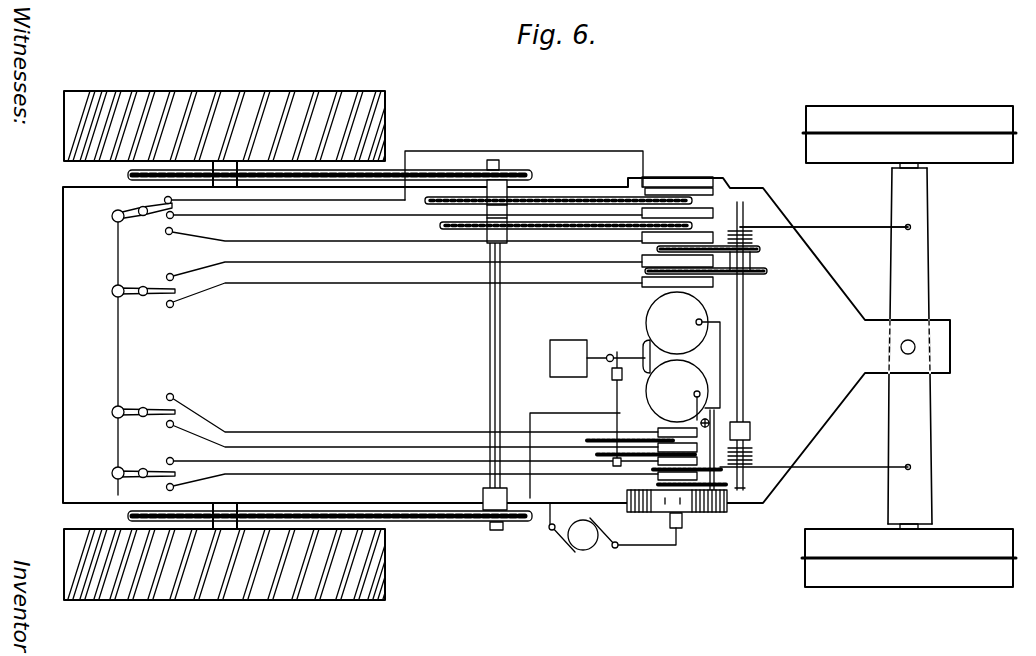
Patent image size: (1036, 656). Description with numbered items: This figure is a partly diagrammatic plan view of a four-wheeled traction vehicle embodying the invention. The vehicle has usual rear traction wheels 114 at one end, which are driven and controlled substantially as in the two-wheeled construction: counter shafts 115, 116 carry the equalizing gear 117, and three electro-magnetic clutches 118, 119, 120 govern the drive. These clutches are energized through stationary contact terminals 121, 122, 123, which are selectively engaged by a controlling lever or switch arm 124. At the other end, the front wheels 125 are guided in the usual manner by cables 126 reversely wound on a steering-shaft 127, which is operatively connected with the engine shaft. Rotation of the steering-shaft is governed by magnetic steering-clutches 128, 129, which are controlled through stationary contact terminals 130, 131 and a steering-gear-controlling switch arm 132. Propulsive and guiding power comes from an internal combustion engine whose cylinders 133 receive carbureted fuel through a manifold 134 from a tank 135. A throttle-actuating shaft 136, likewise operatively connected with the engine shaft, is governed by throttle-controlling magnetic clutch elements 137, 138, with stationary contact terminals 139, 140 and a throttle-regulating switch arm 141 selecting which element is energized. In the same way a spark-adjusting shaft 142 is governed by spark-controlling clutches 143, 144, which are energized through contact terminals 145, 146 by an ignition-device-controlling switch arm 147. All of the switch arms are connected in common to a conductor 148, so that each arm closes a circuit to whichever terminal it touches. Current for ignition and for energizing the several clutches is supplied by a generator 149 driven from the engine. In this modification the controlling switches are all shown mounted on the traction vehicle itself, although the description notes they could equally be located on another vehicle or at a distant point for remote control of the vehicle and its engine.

The rear traction wheels 114 is at (226, 101).
The counter shaft 115 is at (496, 160).
The counter shaft 116 is at (489, 324).
The equalizing gear 117 is at (530, 202).
The electro-magnetic clutch 118 is at (665, 180).
The electro-magnetic clutch 119 is at (713, 214).
The electro-magnetic clutch 120 is at (730, 240).
The stationary contact terminal 121 is at (164, 200).
The stationary contact terminal 122 is at (167, 218).
The stationary contact terminal 123 is at (167, 234).
The controlling lever or switch arm 124 is at (122, 220).
The front wheels 125 is at (885, 110).
The cables 126 is at (840, 227).
The steering-shaft 127 is at (743, 340).
The magnetic steering-clutch 128 is at (700, 268).
The magnetic steering-clutch 129 is at (712, 284).
The stationary contact terminal 130 is at (171, 273).
The stationary contact terminal 131 is at (174, 305).
The steering-gear-controlling switch arm 132 is at (134, 296).
The cylinders 133 is at (683, 357).
The manifold 134 is at (645, 348).
The tank 135 is at (565, 345).
The throttle-actuating shaft 136 is at (615, 388).
The throttle-controlling magnetic clutch element 137 is at (660, 432).
The throttle-controlling magnetic clutch element 138 is at (750, 425).
The stationary contact terminal 139 is at (172, 393).
The stationary contact terminal 140 is at (167, 426).
The throttle-regulating switch arm 141 is at (128, 418).
The spark-adjusting shaft 142 is at (716, 408).
The spark-controlling clutch 143 is at (752, 452).
The spark-controlling clutch 144 is at (747, 478).
The contact terminal 145 is at (167, 459).
The contact terminal 146 is at (174, 488).
The ignition-device-controlling switch arm 147 is at (128, 478).
The conductor 148 is at (120, 370).
The generator 149 is at (590, 548).